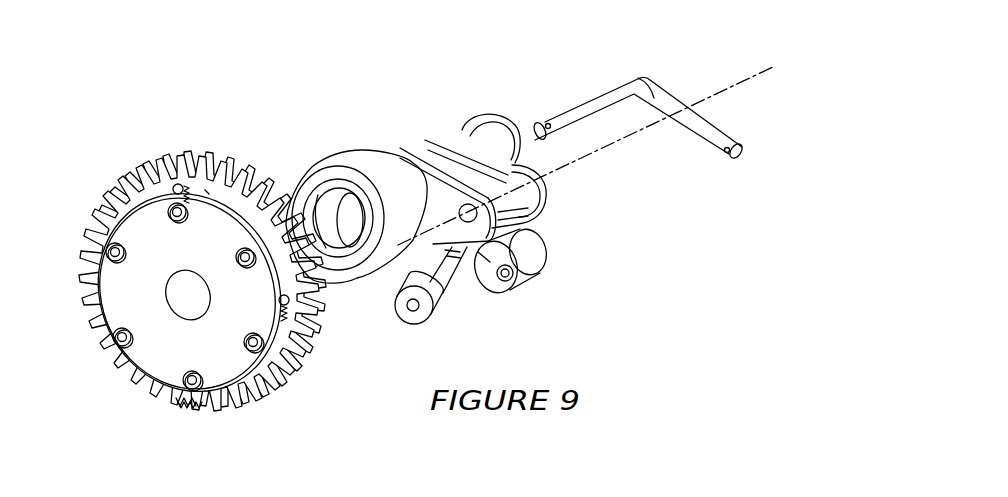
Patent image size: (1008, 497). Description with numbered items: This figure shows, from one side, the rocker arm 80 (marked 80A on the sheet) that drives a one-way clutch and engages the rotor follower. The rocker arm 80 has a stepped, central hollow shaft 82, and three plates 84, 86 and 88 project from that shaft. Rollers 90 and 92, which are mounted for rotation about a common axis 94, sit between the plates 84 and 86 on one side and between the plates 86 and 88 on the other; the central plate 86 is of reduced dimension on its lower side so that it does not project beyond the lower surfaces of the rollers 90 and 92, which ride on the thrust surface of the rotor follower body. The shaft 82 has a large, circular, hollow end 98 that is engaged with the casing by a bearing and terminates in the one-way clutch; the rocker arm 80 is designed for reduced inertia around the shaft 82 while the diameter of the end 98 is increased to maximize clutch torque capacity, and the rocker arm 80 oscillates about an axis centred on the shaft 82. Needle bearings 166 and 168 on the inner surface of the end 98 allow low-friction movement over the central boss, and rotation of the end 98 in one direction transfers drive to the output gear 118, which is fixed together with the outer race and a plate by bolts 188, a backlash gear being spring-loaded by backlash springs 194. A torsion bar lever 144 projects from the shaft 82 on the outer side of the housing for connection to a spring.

The actuator assembly 80A is at (489, 122).
The rocker arm 80 is at (536, 177).
The central hollow shaft 82 is at (515, 120).
The plate 84 is at (545, 190).
The central plate 86 is at (452, 135).
The plate 88 is at (445, 233).
The roller 90 is at (530, 198).
The roller 92 is at (525, 205).
The common axis 94 is at (722, 90).
The large circular hollow end 98 is at (352, 162).
The output gear 118 is at (253, 408).
The torsion bar lever 144 is at (720, 143).
The needle bearing 166 is at (338, 217).
The needle bearing 168 is at (336, 255).
The bolts 188 is at (148, 496).
The backlash springs 194 is at (183, 410).